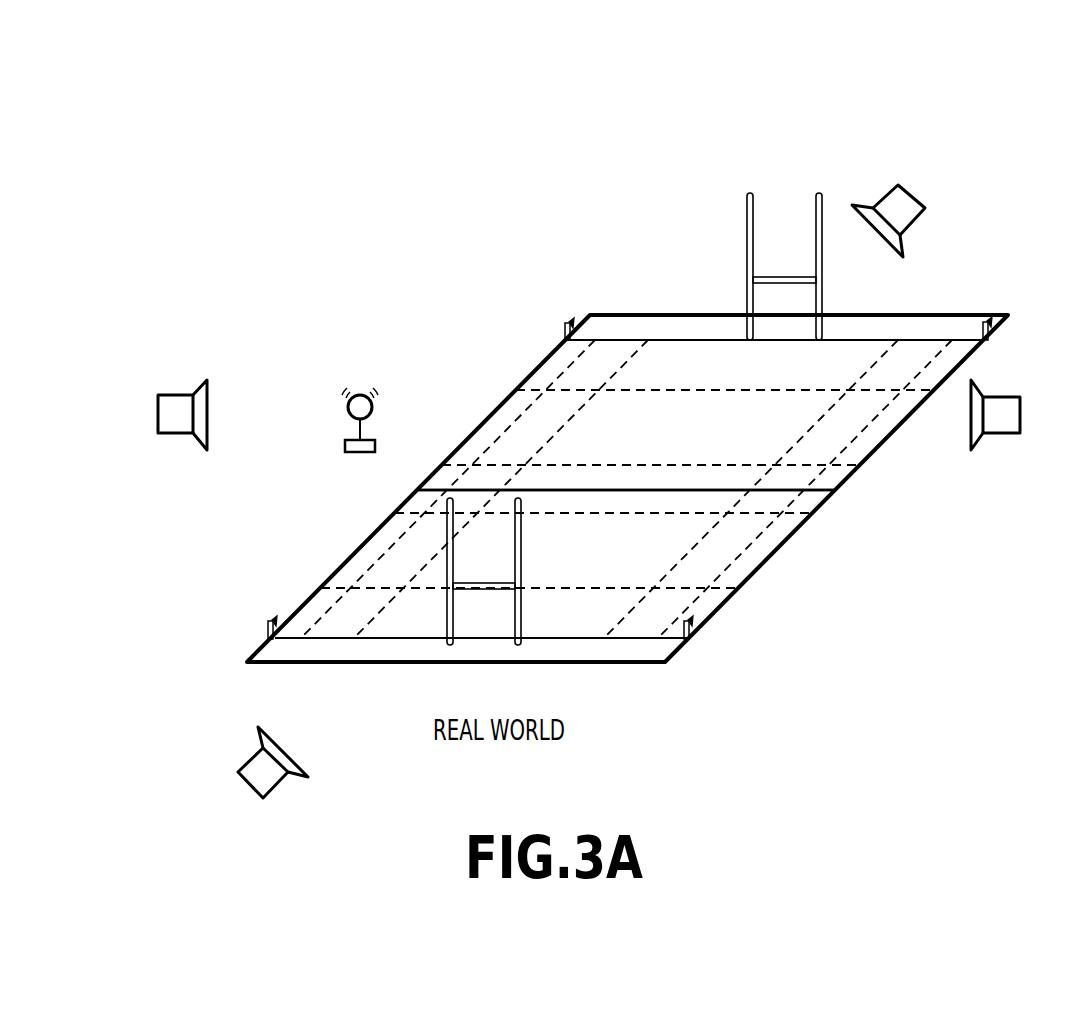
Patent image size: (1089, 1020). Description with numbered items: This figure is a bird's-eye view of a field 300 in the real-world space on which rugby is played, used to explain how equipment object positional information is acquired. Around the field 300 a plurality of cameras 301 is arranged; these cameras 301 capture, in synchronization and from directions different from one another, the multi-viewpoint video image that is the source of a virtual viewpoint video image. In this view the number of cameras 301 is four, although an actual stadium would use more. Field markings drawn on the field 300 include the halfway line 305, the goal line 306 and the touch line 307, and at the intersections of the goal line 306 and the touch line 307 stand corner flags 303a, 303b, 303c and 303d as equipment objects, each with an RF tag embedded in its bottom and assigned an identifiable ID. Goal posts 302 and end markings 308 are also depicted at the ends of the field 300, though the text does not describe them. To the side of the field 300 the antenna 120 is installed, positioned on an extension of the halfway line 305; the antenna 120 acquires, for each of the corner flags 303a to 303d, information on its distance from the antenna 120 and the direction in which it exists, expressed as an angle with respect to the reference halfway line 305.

The field 300 is at (999, 186).
The camera 301 is at (180, 395).
The net posts 302 is at (748, 205).
The corner flag 303a is at (563, 324).
The corner flag 303b is at (992, 318).
The corner flag 303c is at (695, 620).
The corner flag 303d is at (268, 620).
The halfway line 305 is at (620, 488).
The goal line 306 is at (845, 342).
The touch line 307 is at (472, 430).
The base line 308 is at (666, 314).
The antenna 120 is at (345, 440).